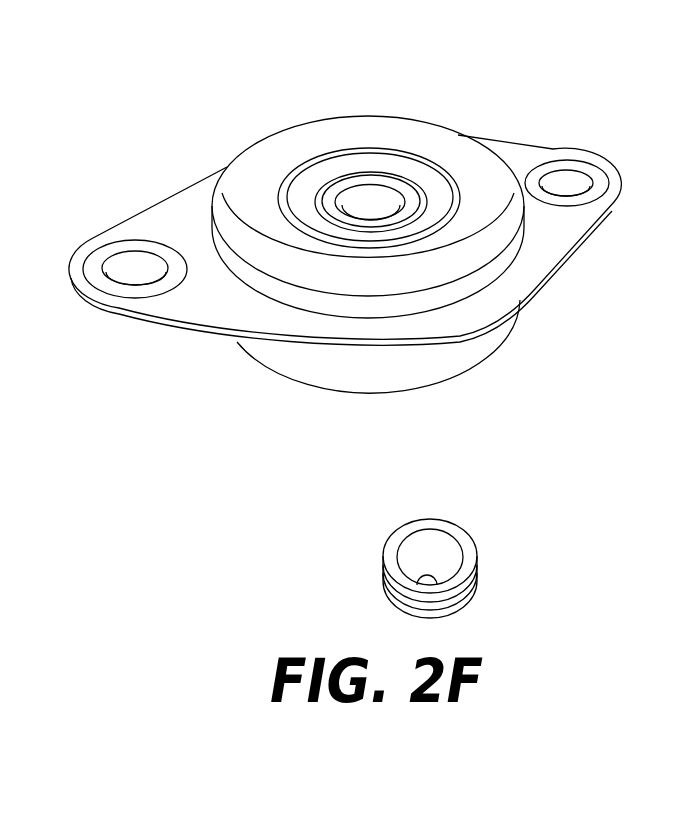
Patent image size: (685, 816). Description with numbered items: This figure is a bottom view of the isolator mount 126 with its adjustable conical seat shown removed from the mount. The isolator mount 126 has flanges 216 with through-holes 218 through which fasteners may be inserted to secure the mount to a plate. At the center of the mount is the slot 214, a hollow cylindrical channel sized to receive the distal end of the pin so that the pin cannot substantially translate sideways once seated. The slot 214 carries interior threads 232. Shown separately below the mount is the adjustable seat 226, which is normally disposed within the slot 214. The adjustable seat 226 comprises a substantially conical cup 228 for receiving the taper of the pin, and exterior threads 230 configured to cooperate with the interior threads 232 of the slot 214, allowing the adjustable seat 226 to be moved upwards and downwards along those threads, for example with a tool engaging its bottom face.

The isolator mount 126 is at (368, 270).
The slot 214 is at (393, 198).
The flanges 216 is at (172, 307).
The through-holes 218 is at (134, 264).
The adjustable seat 226 is at (397, 553).
The substantially conical cup 228 is at (448, 543).
The exterior threads 230 is at (455, 593).
The interior threads 232 is at (352, 193).